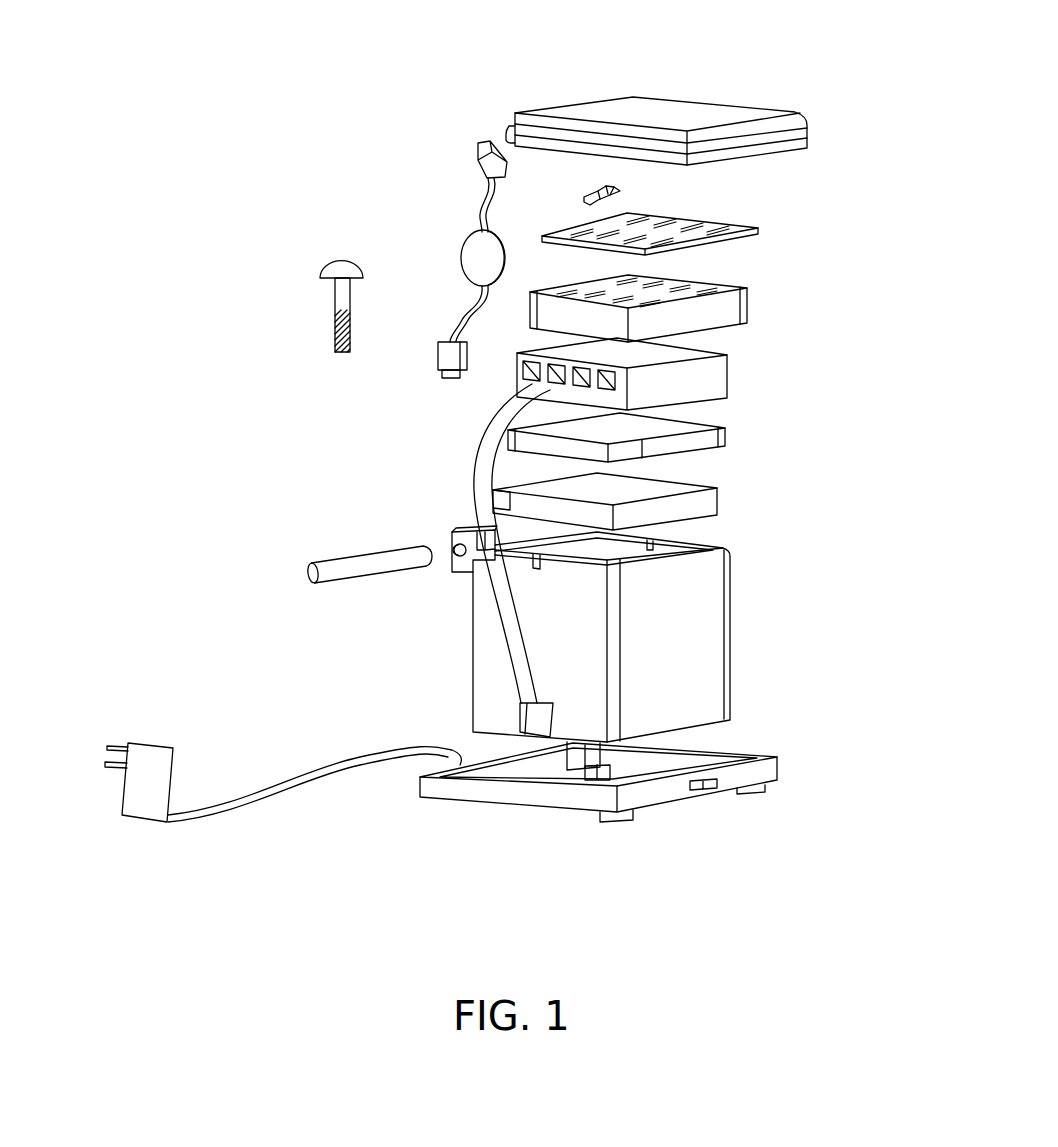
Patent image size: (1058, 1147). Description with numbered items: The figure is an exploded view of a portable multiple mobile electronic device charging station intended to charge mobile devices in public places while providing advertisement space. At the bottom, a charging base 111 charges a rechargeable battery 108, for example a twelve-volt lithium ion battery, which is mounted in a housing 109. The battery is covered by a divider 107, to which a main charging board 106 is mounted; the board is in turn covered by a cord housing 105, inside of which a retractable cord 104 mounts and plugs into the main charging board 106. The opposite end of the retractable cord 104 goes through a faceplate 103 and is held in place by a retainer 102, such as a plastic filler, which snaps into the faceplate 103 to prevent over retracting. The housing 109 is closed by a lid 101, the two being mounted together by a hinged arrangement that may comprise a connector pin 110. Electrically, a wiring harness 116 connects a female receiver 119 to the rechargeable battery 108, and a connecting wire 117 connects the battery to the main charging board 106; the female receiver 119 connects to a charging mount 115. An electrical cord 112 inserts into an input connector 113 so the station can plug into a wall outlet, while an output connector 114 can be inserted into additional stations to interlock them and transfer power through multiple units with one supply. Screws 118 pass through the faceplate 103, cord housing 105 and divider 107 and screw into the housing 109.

The lid 101 is at (763, 110).
The retainer 102 is at (620, 190).
The faceplate 103 is at (762, 230).
The retractable cord 104 is at (462, 255).
The cord housing 105 is at (748, 307).
The main charging board 106 is at (727, 375).
The divider 107 is at (725, 440).
The rechargeable battery 108 is at (720, 503).
The housing 109 is at (732, 607).
The connector pin 110 is at (333, 557).
The charging base 111 is at (777, 757).
The electrical cord 112 is at (150, 743).
The input connector 113 is at (480, 750).
The output connector 114 is at (717, 788).
The charging mount 115 is at (610, 752).
The wiring harness 116 is at (503, 632).
The connecting wire 117 is at (470, 442).
The screws 118 is at (330, 308).
The female receiver 119 is at (543, 703).